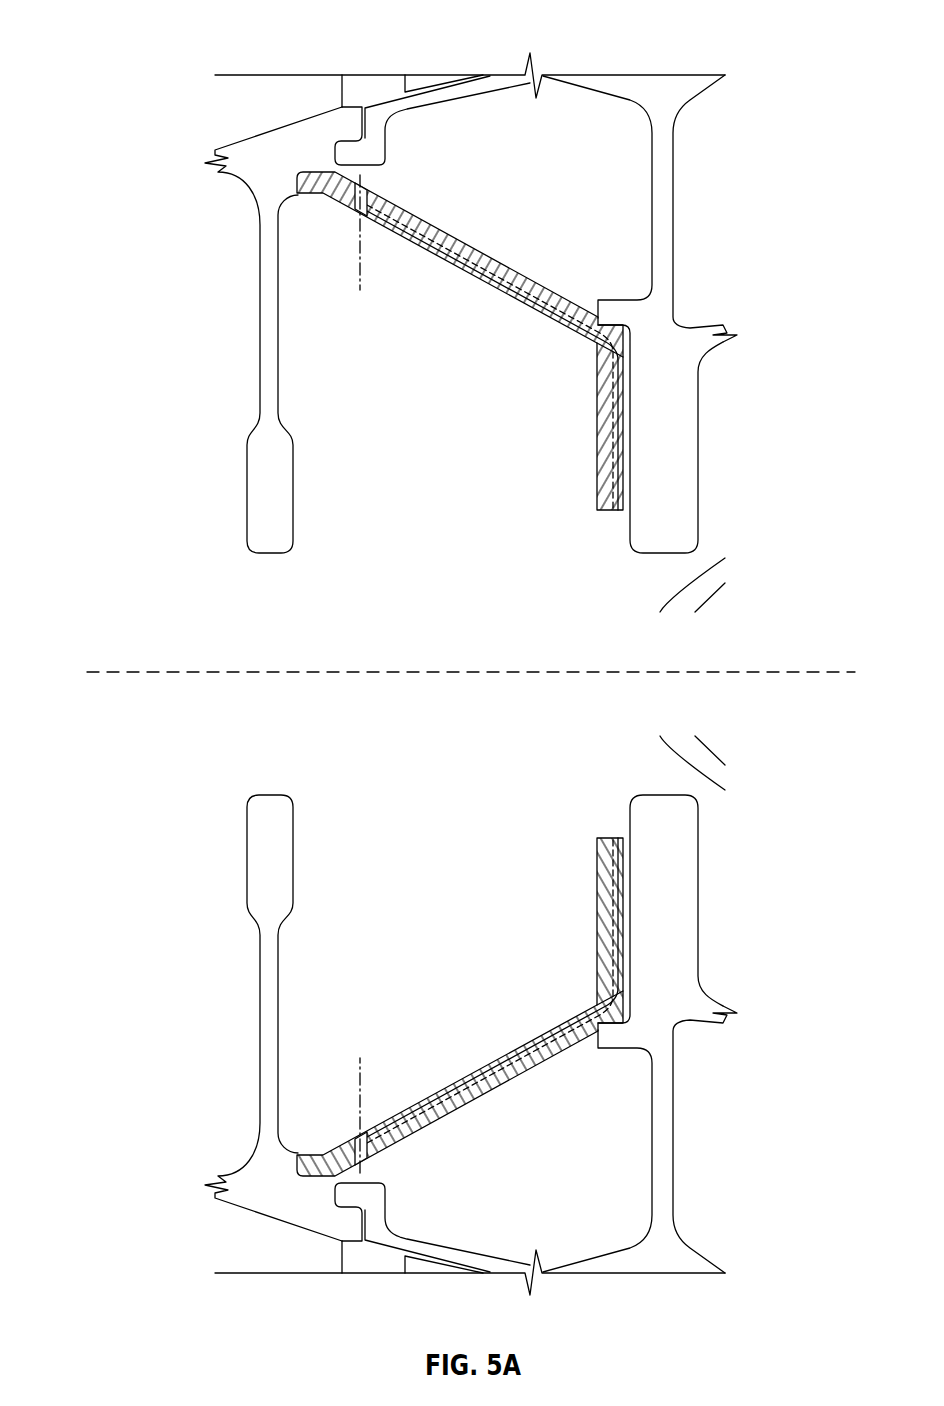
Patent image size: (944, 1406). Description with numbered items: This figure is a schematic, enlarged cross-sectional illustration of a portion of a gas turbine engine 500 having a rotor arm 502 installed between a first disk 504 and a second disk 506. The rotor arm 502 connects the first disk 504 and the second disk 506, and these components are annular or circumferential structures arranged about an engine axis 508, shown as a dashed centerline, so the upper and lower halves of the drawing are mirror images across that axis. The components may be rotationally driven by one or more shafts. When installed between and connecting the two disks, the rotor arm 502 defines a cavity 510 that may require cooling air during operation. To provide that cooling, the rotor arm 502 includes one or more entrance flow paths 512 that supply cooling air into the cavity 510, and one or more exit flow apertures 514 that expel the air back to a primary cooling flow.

The gas turbine engine 500 is at (131, 41).
The rotor arm 502 is at (448, 245).
The first disk 504 is at (690, 468).
The second disk 506 is at (258, 512).
The engine axis 508 is at (125, 671).
The cavity 510 is at (608, 135).
The entrance flow path 512 is at (612, 432).
The exit flow aperture 514 is at (368, 208).